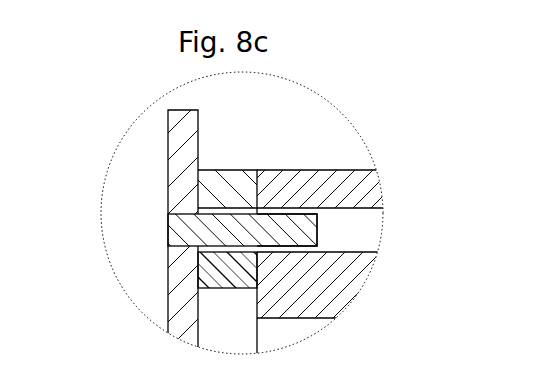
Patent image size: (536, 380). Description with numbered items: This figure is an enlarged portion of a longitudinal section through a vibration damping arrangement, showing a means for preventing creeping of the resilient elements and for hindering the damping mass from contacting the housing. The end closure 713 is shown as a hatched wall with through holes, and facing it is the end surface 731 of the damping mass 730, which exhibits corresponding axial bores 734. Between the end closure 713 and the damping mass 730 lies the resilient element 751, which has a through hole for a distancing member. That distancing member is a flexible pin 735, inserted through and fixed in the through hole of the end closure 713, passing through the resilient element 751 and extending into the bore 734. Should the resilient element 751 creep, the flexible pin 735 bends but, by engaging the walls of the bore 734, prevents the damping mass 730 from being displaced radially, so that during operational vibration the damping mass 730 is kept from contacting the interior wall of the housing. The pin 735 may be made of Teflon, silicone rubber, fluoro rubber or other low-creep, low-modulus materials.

The end closure 713 is at (168, 145).
The resilient element 751 is at (222, 170).
The damping mass 730 is at (315, 170).
The axial bore 734 is at (337, 210).
The flexible pin 735 is at (317, 231).
The end surface 731 is at (257, 323).